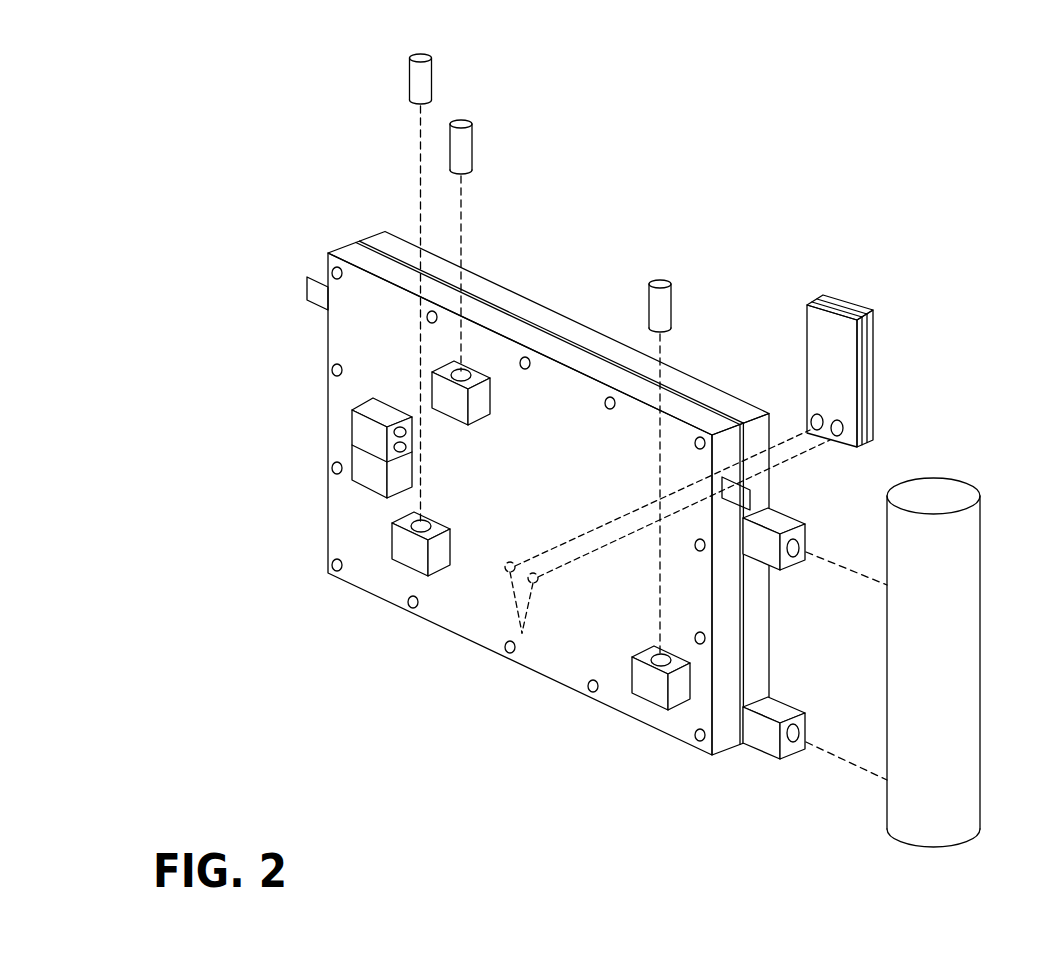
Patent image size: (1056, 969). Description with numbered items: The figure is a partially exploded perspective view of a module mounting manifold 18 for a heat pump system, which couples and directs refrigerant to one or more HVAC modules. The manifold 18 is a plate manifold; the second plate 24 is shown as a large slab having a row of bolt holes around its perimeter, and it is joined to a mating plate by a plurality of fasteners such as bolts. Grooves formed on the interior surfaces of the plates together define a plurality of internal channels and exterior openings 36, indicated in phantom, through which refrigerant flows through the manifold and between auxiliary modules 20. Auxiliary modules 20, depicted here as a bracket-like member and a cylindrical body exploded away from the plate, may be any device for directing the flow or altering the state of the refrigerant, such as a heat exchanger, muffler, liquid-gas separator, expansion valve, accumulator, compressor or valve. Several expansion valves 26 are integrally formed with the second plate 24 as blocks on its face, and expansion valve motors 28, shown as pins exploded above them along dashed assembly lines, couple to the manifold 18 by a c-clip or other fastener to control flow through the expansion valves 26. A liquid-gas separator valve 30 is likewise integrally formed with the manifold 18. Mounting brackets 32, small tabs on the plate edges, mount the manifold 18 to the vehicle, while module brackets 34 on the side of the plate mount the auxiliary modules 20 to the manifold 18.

The module mounting manifold 18 is at (256, 167).
The auxiliary modules 20 is at (855, 305).
The second plate 24 is at (385, 243).
The expansion valves 26 is at (410, 553).
The expansion valve motors 28 is at (462, 147).
The liquid-gas separator valve 30 is at (363, 427).
The mounting brackets 32 is at (307, 288).
The module brackets 34 is at (792, 570).
The exterior openings 36 is at (522, 633).